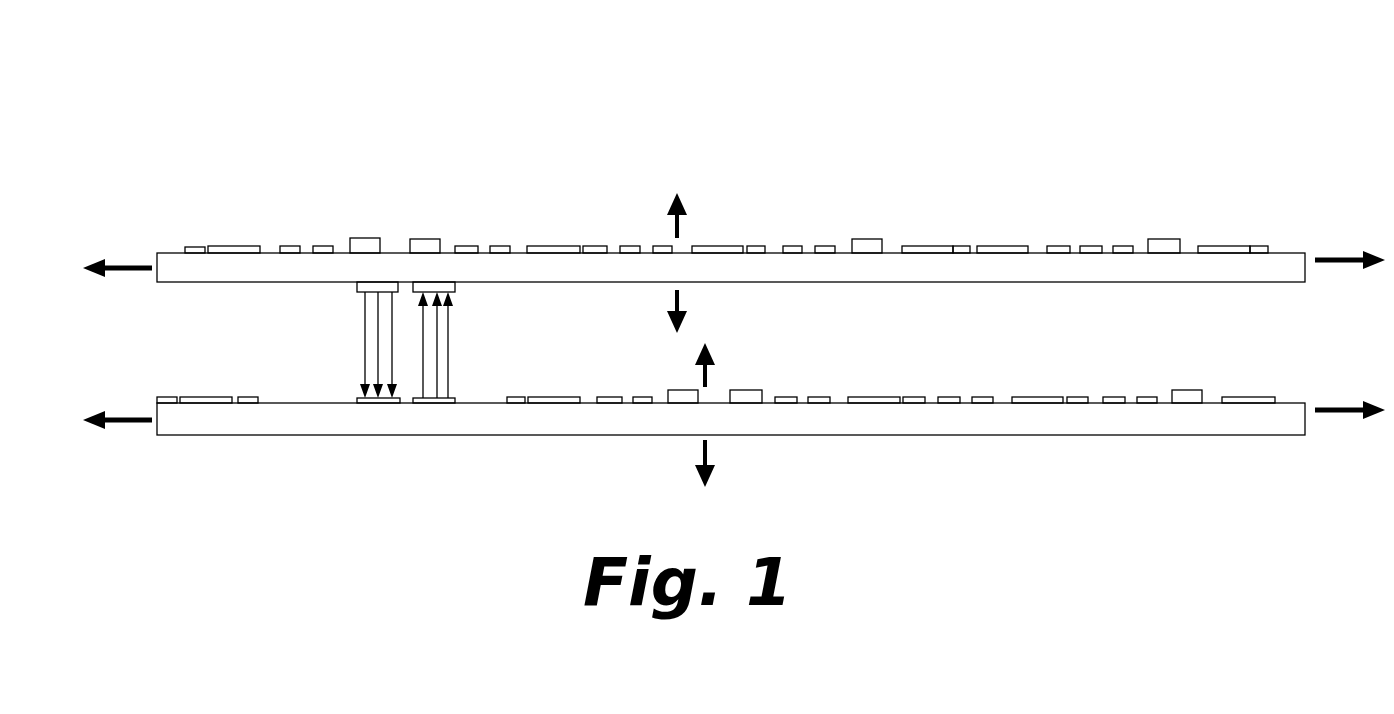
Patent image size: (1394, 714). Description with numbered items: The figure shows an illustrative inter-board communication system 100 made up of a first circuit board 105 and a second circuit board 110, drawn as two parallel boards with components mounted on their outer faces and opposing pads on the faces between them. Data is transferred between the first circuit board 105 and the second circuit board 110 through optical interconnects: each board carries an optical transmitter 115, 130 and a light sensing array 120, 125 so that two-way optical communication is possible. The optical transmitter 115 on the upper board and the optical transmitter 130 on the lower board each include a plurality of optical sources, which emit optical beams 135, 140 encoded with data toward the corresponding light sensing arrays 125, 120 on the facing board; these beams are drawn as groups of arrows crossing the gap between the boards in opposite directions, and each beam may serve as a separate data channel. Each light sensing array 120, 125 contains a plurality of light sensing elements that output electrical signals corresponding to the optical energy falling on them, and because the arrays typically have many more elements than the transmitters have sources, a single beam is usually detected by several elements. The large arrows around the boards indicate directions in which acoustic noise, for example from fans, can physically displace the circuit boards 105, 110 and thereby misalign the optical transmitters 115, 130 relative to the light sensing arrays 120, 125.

The inter-board communication system 100 is at (215, 128).
The first circuit board 105 is at (198, 276).
The second circuit board 110 is at (195, 425).
The optical transmitter 115 is at (357, 288).
The light sensing array 120 is at (455, 289).
The light sensing array 125 is at (357, 398).
The optical transmitter 130 is at (455, 398).
The optical beam 135 is at (357, 344).
The optical beam 140 is at (462, 351).